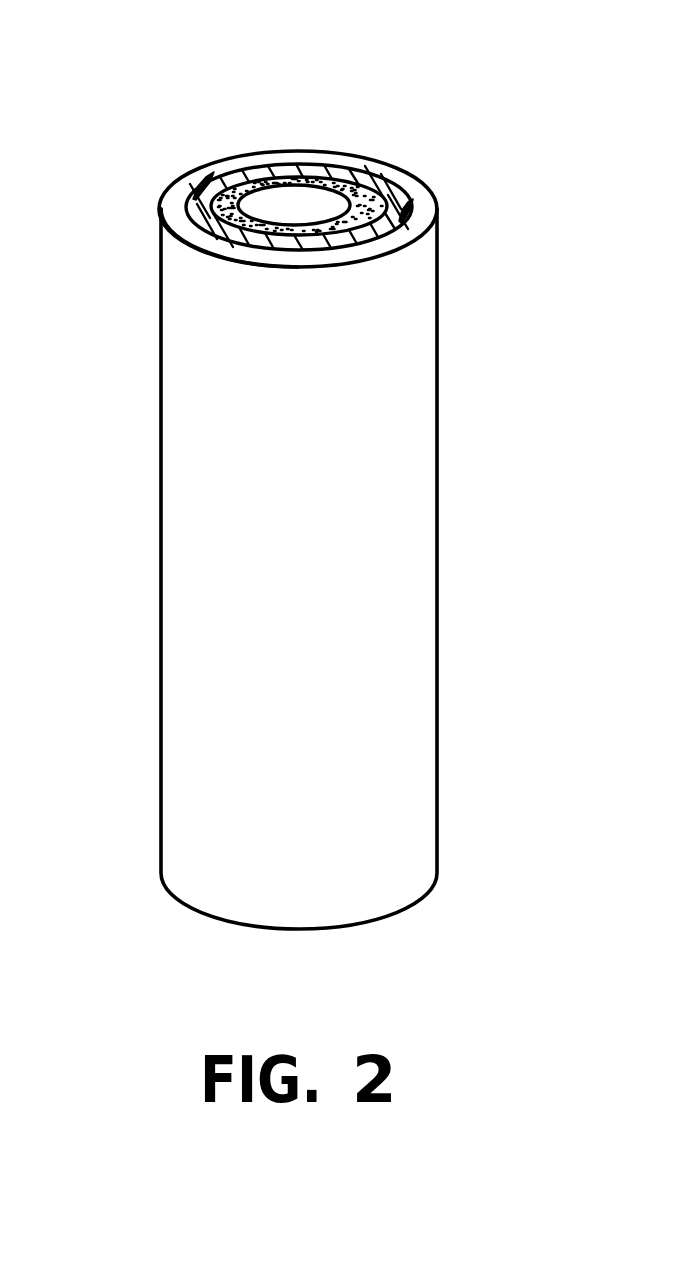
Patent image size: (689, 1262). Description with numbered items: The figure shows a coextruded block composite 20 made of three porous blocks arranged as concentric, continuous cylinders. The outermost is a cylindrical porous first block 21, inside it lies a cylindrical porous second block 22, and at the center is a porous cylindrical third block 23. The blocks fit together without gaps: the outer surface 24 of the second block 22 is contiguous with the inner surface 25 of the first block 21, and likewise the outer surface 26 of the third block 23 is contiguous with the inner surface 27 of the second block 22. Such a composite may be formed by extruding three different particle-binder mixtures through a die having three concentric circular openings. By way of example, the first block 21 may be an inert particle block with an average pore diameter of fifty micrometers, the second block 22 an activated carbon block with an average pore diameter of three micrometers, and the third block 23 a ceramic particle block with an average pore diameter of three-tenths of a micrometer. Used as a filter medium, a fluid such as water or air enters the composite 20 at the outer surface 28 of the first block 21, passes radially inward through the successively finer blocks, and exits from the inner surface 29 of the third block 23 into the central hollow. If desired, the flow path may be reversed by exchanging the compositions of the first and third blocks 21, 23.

The coextruded block composite 20 is at (308, 469).
The first block 21 is at (428, 198).
The second block 22 is at (356, 130).
The third block 23 is at (355, 190).
The outer surface of the second block 24 is at (210, 188).
The inner surface of the first block 25 is at (222, 257).
The outer surface of the third block 26 is at (251, 170).
The inner surface of the second block 27 is at (188, 213).
The outer surface of the first block 28 is at (390, 735).
The inner surface of the third block 29 is at (290, 198).